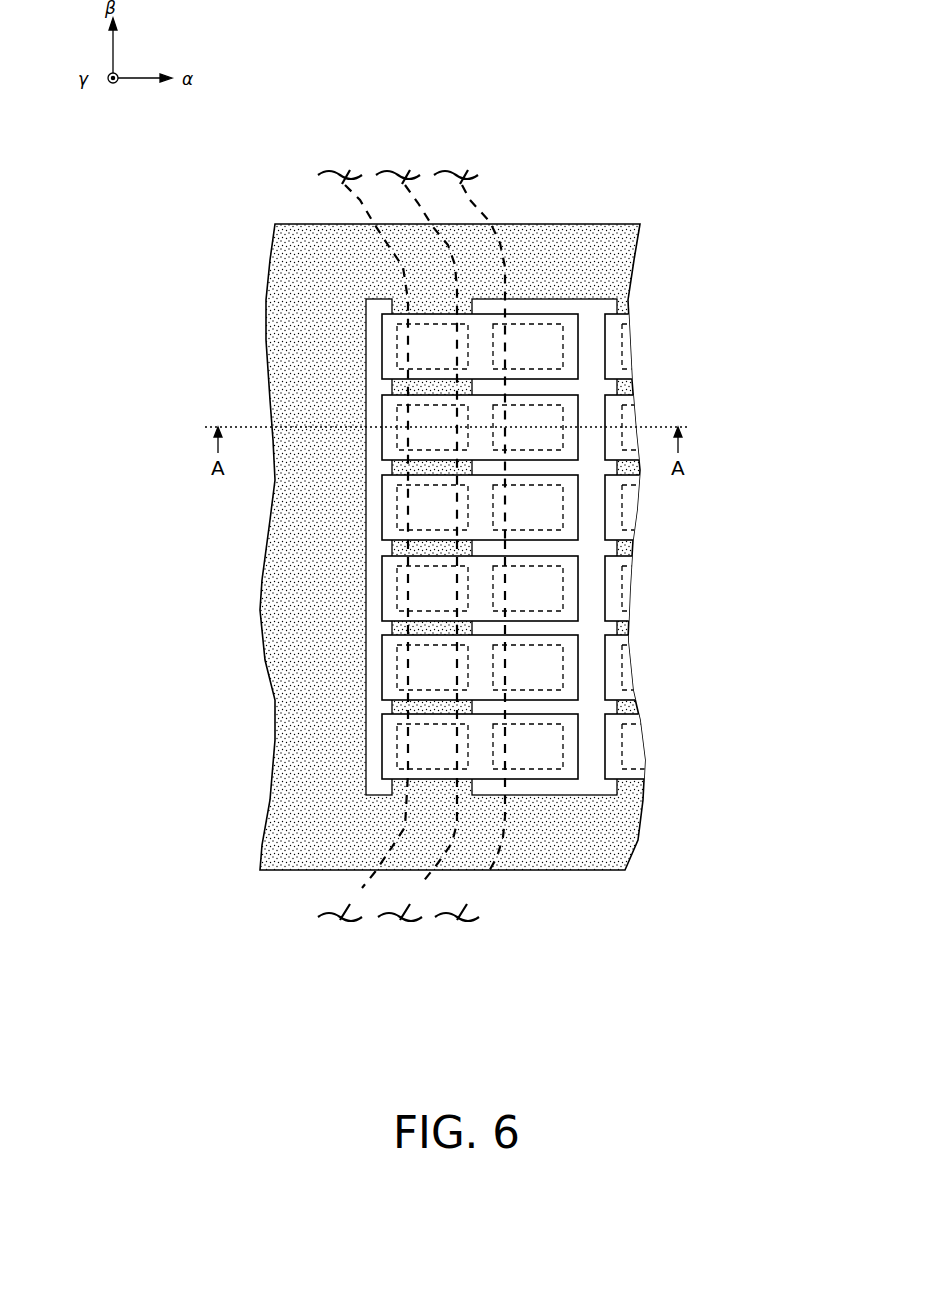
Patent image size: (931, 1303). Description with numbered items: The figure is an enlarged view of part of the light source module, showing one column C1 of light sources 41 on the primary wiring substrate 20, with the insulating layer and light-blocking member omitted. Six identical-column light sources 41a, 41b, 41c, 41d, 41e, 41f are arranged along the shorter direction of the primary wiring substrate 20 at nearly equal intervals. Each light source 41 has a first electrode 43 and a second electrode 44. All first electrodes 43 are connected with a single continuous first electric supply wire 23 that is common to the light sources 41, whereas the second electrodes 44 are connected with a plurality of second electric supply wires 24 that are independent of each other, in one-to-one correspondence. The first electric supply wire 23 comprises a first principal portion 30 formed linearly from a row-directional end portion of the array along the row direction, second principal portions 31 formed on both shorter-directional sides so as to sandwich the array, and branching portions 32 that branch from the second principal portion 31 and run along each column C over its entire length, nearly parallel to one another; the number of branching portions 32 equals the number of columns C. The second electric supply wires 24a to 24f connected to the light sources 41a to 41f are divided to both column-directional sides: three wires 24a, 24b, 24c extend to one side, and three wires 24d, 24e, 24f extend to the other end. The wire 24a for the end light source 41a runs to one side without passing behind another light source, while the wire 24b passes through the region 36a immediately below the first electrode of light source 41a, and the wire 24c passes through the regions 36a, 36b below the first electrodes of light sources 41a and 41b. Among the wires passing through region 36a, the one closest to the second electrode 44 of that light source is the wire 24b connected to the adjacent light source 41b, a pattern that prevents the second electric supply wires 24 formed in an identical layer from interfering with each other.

The primary wiring substrate 20 is at (641, 222).
The first electric supply wire 23 is at (275, 812).
The second electric supply wires 24 is at (386, 553).
The second electric supply wire 24a is at (480, 195).
The second electric supply wire 24b is at (422, 190).
The second electric supply wire 24c is at (350, 196).
The second electric supply wire 24d is at (353, 902).
The second electric supply wire 24e is at (423, 933).
The second electric supply wire 24f is at (473, 907).
The first principal portion 30 is at (288, 671).
The second principal portion 31 is at (620, 237).
The branching portion 32 is at (397, 703).
The region immediately below first electrode 36a is at (450, 357).
The region immediately below first electrode 36b is at (450, 437).
The light source 41 is at (447, 546).
The identical-column light source 41a is at (382, 347).
The identical-column light source 41b is at (382, 408).
The identical-column light source 41c is at (580, 502).
The identical-column light source 41d is at (580, 595).
The identical-column light source 41e is at (580, 663).
The identical-column light source 41f is at (580, 743).
The first electrode 43 is at (365, 312).
The second electrode 44 is at (540, 318).
The column C is at (628, 872).
The column C1 is at (552, 787).